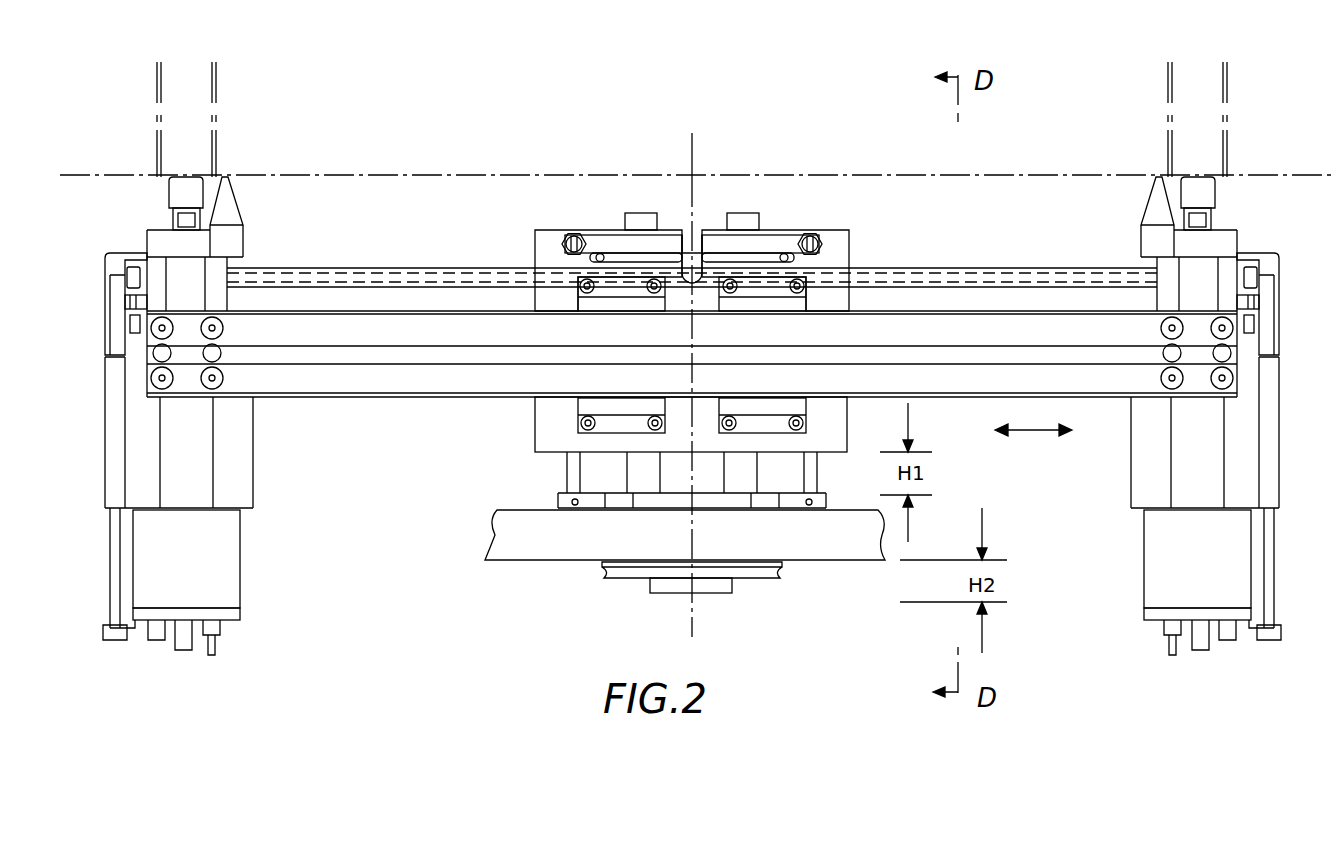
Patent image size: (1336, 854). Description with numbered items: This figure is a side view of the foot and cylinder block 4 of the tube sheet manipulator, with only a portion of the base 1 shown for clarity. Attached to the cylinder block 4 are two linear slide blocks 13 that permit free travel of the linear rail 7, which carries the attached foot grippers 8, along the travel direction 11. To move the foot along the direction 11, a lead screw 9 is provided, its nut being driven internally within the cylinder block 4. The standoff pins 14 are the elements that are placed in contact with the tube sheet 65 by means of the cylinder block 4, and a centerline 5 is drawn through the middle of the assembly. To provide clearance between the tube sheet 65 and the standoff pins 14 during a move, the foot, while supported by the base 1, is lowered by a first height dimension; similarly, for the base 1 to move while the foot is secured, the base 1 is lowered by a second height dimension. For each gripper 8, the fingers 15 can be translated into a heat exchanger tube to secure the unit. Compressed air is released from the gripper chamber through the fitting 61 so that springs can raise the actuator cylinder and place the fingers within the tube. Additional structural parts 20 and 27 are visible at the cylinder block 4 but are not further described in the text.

The base 1 is at (530, 560).
The cylinder block 4 is at (546, 230).
The center axis 5 is at (692, 143).
The linear rail 7 is at (333, 398).
The foot grippers 8 is at (240, 545).
The lead screw 9 is at (308, 268).
The direction 11 is at (1037, 432).
The linear slide blocks 13 is at (580, 297).
The standoff pins 14 is at (233, 192).
The fingers 15 is at (167, 212).
The clamping bar 20 is at (610, 232).
The clamping bar 27 is at (762, 233).
The fitting 61 is at (125, 298).
The tube sheet 65 is at (452, 177).